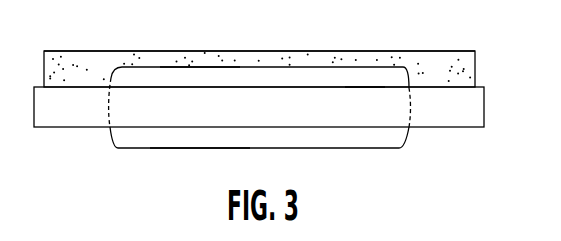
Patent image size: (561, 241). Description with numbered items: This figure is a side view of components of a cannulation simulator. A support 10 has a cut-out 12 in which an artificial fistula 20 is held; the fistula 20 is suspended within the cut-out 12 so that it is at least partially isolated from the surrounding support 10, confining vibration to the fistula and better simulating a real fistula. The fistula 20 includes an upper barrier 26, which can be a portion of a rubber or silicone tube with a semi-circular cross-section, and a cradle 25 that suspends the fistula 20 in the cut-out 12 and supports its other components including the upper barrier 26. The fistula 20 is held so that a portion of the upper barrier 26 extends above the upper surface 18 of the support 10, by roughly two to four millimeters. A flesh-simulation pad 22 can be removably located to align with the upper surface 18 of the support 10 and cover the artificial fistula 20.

The support 10 is at (457, 128).
The cut-out 12 is at (393, 118).
The upper surface 18 is at (457, 88).
The artificial fistula 20 is at (362, 83).
The flesh-simulation pad 22 is at (477, 58).
The cradle 25 is at (182, 150).
The upper barrier 26 is at (196, 75).